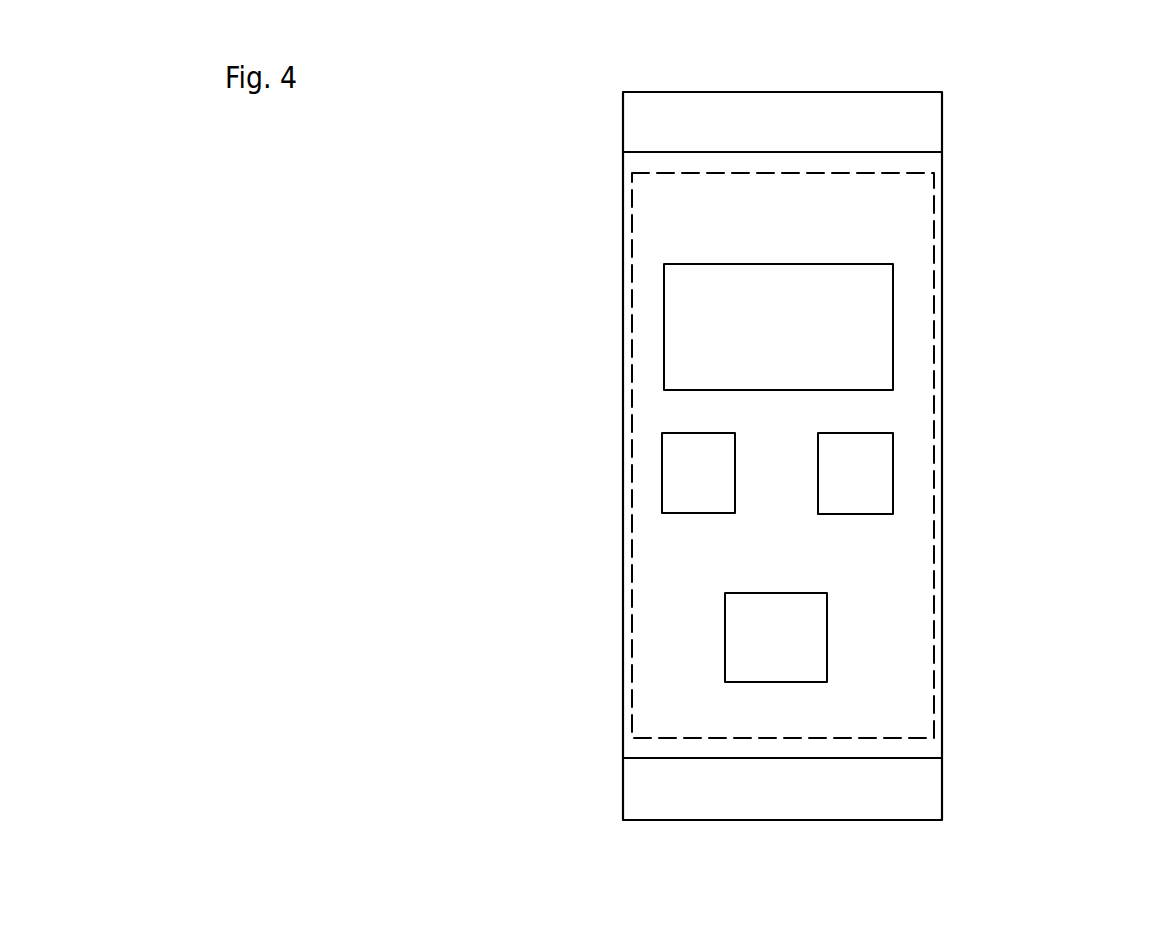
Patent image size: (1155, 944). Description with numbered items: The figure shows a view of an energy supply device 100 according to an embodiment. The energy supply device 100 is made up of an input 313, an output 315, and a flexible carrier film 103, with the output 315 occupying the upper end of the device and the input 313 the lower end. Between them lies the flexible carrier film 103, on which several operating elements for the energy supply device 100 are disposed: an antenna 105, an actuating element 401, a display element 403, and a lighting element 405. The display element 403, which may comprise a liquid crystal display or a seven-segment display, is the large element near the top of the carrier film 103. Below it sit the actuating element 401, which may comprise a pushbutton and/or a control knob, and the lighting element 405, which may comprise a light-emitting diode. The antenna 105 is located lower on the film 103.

The energy supply device 100 is at (622, 708).
The flexible carrier film 103 is at (648, 214).
The antenna 105 is at (737, 607).
The input 313 is at (922, 792).
The output 315 is at (908, 111).
The actuating element 401 is at (673, 462).
The display element 403 is at (683, 298).
The lighting element 405 is at (877, 461).